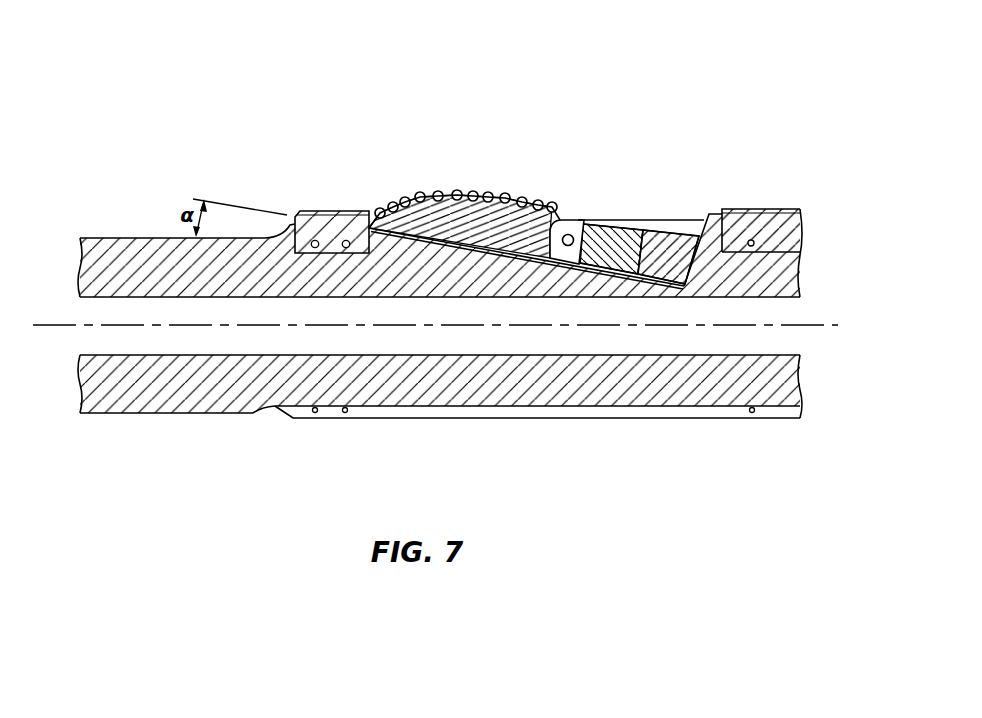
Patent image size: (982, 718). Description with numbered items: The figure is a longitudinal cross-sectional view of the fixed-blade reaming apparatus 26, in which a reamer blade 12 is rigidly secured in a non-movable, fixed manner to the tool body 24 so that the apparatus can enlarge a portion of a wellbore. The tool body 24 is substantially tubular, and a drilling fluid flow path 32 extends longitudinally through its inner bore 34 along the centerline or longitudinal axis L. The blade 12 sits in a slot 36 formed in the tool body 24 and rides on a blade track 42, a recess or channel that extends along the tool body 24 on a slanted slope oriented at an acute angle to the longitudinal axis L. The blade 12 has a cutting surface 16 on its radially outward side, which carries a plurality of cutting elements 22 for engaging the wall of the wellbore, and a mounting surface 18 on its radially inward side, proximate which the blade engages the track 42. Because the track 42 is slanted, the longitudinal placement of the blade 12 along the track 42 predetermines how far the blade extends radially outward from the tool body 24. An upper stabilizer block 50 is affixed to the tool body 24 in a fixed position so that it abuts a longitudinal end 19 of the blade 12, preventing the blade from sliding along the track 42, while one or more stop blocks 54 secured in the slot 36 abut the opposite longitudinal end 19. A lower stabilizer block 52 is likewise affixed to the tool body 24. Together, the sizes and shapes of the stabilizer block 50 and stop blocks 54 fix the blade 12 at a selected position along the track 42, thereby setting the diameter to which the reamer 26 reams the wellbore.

The fixed-blade reaming apparatus 26 is at (178, 70).
The tool body 24 is at (122, 248).
The upper stabilizer block 50 is at (323, 211).
The longitudinal end 19 is at (355, 211).
The blade track 42 is at (438, 220).
The cutting elements 22 is at (473, 191).
The reamer blade 12 is at (493, 217).
The cutting surface 16 is at (548, 213).
The stop block 54 is at (660, 232).
The slot 36 is at (687, 211).
The lower stabilizer block 52 is at (765, 220).
The inner bore 34 is at (775, 298).
The drilling fluid flow path 32 is at (800, 337).
The mounting surface 18 is at (470, 248).
The longitudinal axis L is at (58, 323).